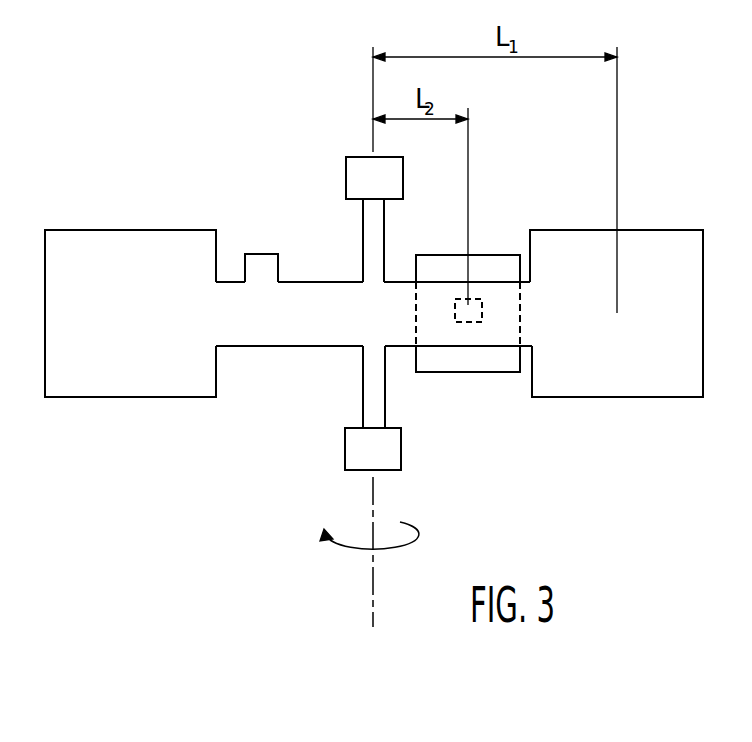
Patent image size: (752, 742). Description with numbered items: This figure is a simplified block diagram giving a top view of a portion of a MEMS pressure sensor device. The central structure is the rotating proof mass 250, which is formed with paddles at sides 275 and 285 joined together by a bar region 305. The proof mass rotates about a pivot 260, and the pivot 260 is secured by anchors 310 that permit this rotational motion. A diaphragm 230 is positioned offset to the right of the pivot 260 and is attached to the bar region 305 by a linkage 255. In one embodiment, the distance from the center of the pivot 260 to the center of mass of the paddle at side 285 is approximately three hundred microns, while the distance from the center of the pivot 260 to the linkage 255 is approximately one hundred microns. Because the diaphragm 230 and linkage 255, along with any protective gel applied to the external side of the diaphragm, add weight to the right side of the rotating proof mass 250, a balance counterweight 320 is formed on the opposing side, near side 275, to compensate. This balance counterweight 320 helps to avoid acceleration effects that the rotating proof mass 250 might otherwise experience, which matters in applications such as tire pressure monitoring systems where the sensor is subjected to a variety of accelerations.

The bar region 305 is at (323, 327).
The side 275 is at (89, 238).
The side 285 is at (667, 239).
The balance counterweight 320 is at (263, 251).
The rotating proof mass 250 is at (255, 348).
The anchors 310 is at (349, 173).
The pivot 260 is at (368, 408).
The diaphragm 230 is at (498, 363).
The linkage 255 is at (477, 306).